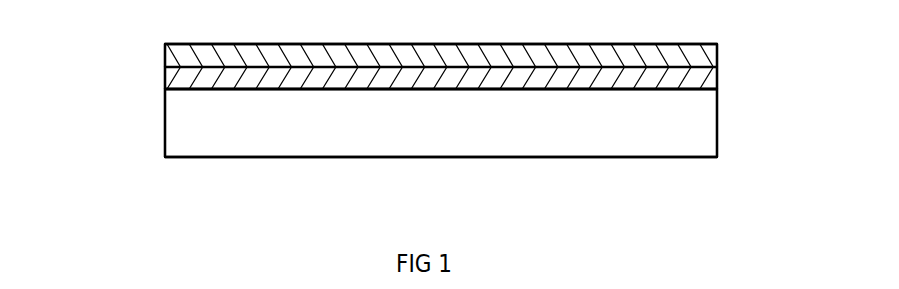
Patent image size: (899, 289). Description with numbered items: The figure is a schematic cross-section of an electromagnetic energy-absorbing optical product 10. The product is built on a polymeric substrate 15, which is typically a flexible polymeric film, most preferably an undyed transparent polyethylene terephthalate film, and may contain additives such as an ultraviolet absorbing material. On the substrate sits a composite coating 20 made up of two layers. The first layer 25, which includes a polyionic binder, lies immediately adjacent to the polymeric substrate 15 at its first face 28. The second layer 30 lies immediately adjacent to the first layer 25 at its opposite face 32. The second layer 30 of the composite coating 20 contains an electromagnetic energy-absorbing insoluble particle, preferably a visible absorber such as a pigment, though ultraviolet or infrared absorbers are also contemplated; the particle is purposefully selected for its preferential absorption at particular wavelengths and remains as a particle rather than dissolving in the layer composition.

The electromagnetic energy-absorbing optical product 10 is at (128, 157).
The polymeric substrate 15 is at (718, 120).
The composite coating 20 is at (75, 45).
The first layer 25 is at (165, 77).
The second layer 30 is at (165, 54).
The first face 28 is at (717, 87).
The opposite face 32 is at (717, 65).